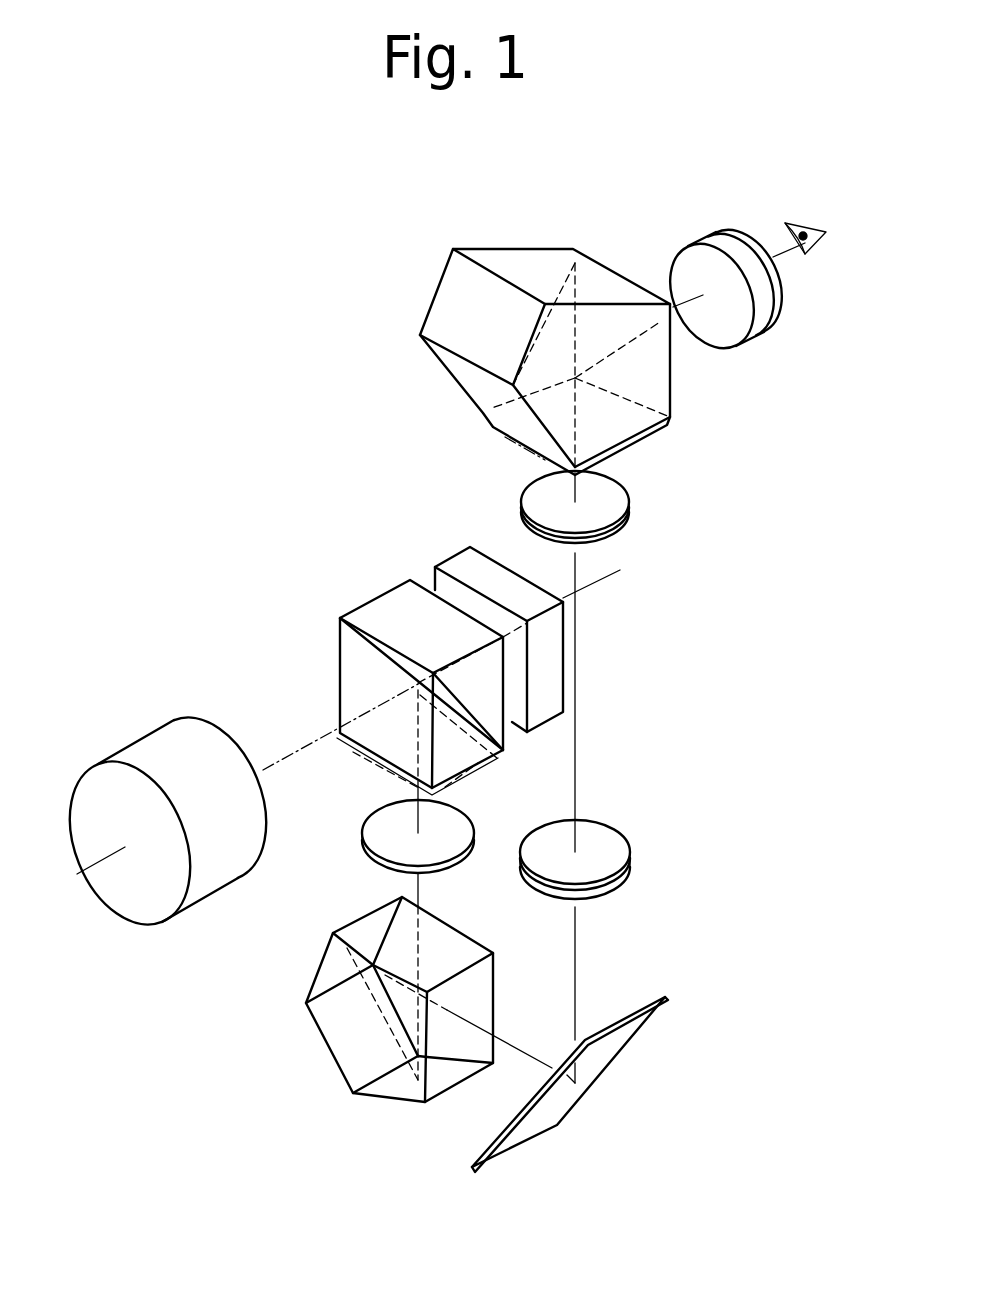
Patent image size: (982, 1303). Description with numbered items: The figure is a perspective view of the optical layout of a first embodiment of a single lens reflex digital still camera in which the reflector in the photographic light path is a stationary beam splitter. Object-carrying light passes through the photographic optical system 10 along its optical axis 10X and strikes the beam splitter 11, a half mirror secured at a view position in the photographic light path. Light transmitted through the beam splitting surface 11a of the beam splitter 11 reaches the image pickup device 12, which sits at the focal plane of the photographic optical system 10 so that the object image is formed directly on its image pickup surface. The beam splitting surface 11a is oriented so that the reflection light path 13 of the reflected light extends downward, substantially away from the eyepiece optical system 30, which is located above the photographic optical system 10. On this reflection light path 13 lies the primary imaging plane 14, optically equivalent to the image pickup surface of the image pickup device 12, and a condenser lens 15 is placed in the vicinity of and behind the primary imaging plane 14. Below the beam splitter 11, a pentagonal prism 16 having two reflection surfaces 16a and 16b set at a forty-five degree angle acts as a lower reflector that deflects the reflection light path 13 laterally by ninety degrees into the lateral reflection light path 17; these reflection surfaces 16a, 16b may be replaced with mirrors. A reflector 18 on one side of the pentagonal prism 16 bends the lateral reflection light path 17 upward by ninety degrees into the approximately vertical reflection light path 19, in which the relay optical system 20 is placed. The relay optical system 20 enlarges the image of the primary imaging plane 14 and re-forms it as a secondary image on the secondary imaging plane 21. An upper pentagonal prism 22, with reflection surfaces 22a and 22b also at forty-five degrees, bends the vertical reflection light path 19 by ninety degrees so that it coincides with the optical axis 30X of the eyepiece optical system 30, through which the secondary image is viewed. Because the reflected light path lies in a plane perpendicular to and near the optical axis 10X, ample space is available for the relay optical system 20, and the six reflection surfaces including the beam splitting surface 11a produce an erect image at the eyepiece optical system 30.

The photographic optical system 10 is at (167, 737).
The optical axis of the photographic optical system 10X is at (318, 738).
The beam splitter 11 is at (405, 607).
The beam splitting surface 11a is at (378, 650).
The image pickup device 12 is at (462, 562).
The reflection light path 13 is at (418, 810).
The primary imaging plane 14 is at (497, 758).
The condenser lens 15 is at (362, 838).
The pentagonal prism 16 is at (348, 1058).
The reflection surface 16a is at (410, 1085).
The reflection surface 16b is at (343, 966).
The lateral reflection light path 17 is at (525, 1058).
The reflector 18 is at (532, 1143).
The vertical reflection light path 19 is at (575, 945).
The relay optical system 20 is at (638, 490).
The secondary imaging plane 21 is at (635, 441).
The pentagonal prism 22 is at (478, 277).
The reflection surface 22a is at (540, 263).
The reflection surface 22b is at (463, 377).
The eyepiece optical system 30 is at (793, 333).
The optical axis of the eyepiece optical system 30X is at (677, 310).